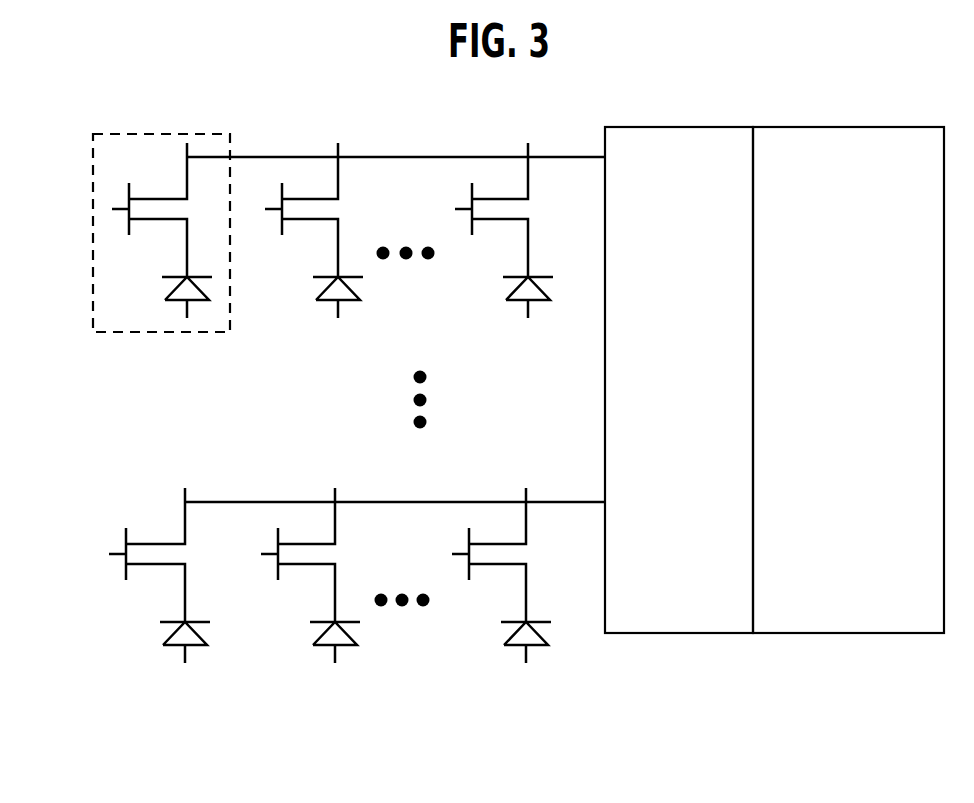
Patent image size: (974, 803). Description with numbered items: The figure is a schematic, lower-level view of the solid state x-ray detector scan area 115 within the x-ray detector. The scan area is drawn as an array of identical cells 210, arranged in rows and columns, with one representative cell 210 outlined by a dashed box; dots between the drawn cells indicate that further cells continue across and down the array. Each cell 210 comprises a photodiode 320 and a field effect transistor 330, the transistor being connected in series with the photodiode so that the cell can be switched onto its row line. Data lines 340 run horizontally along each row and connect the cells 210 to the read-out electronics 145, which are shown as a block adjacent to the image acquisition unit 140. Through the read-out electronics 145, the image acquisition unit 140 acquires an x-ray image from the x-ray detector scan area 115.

The x-ray detector scan area 115 is at (107, 90).
The cell 210 is at (90, 134).
The data line 340 is at (408, 157).
The field effect transistor 330 is at (112, 553).
The photodiode 320 is at (180, 651).
The read-out electronics 145 is at (662, 633).
The image acquisition unit 140 is at (850, 633).